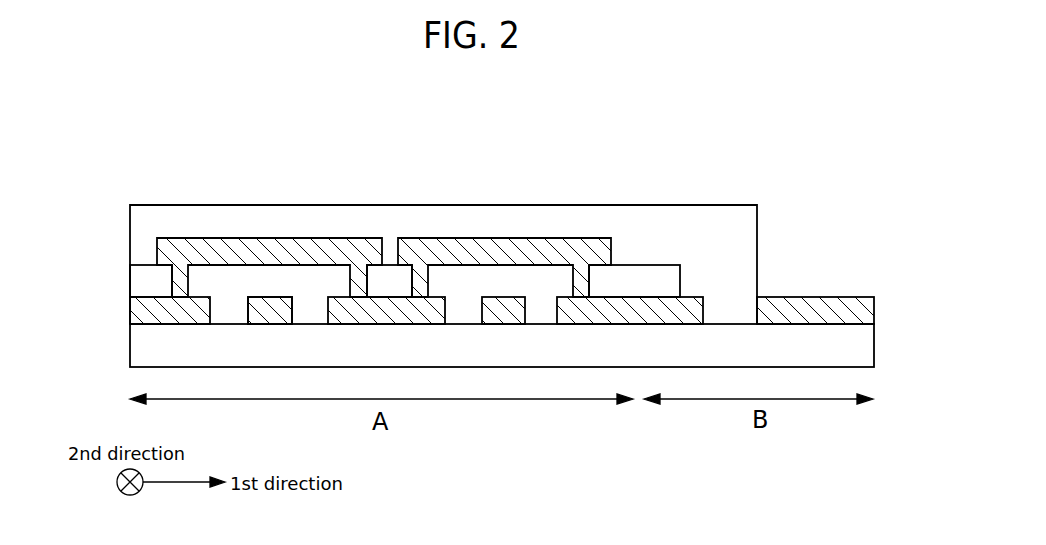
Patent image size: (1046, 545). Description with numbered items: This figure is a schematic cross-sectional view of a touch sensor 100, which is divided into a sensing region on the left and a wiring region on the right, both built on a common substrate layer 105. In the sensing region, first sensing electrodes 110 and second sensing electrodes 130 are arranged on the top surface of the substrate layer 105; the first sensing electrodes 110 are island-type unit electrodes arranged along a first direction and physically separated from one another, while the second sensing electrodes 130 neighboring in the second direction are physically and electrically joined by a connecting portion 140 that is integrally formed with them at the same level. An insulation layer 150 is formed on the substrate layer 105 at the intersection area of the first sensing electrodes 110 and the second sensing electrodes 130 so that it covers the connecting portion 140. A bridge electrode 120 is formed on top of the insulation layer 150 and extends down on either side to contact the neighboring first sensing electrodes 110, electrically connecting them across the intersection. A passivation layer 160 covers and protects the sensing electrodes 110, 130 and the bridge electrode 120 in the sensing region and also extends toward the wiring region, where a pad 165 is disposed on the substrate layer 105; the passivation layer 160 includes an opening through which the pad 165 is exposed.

The touch sensor 100 is at (104, 128).
The substrate layer 105 is at (140, 347).
The first sensing electrode 110 is at (433, 324).
The bridge electrode 120 is at (440, 250).
The second sensing electrode 130 is at (273, 317).
The connecting portion 140 is at (270, 310).
The insulation layer 150 is at (543, 275).
The passivation layer 160 is at (138, 224).
The pad 165 is at (815, 303).